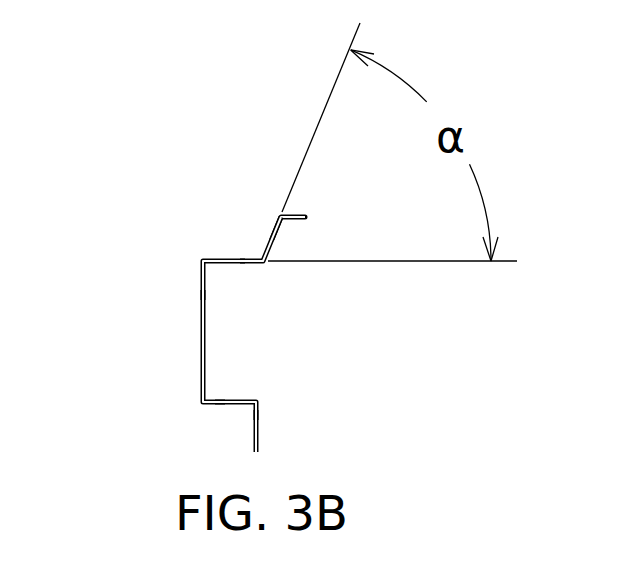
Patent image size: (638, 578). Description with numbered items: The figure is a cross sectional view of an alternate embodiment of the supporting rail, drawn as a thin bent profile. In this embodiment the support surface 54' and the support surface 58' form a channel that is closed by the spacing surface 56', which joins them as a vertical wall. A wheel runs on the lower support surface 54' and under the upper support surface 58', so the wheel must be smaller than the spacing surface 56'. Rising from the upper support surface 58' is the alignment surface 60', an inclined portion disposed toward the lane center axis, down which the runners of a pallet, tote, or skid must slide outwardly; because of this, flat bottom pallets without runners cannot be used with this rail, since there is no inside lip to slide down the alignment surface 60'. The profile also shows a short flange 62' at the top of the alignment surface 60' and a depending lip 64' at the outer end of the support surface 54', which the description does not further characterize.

The support surface 54' is at (279, 374).
The spacing surface 56' is at (162, 315).
The support surface 58' is at (186, 226).
The alignment surface 60' is at (234, 187).
The top flange 62' is at (325, 188).
The depending lip 64' is at (316, 419).